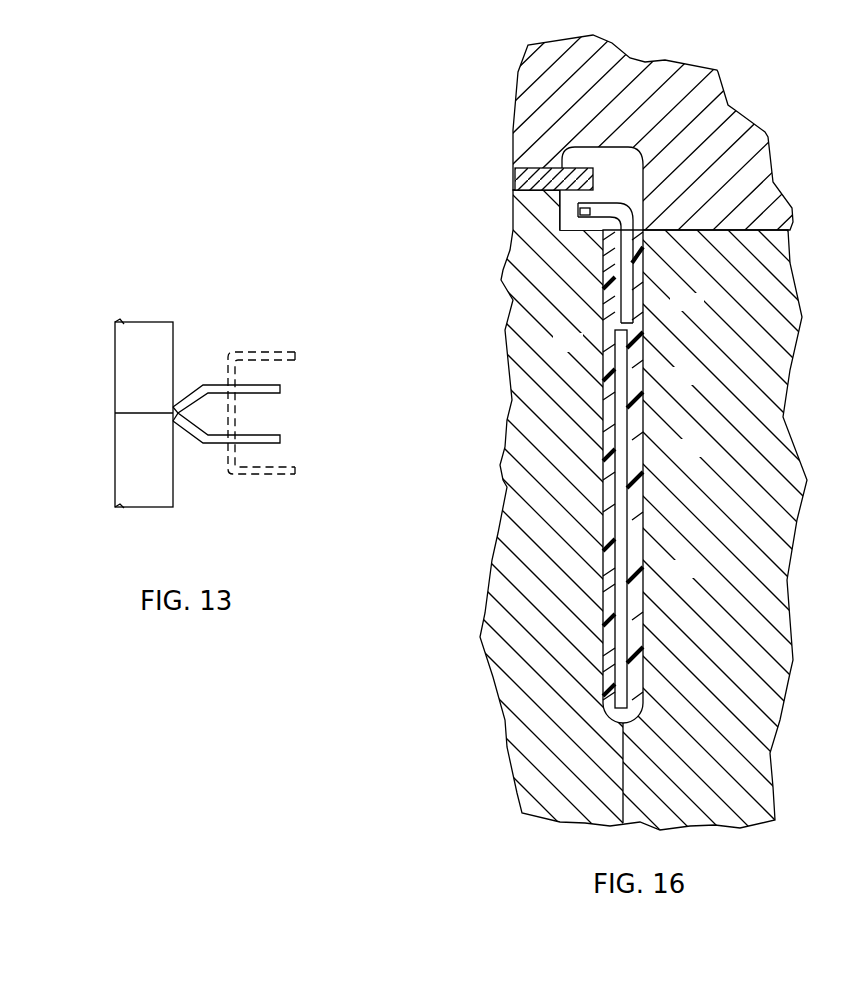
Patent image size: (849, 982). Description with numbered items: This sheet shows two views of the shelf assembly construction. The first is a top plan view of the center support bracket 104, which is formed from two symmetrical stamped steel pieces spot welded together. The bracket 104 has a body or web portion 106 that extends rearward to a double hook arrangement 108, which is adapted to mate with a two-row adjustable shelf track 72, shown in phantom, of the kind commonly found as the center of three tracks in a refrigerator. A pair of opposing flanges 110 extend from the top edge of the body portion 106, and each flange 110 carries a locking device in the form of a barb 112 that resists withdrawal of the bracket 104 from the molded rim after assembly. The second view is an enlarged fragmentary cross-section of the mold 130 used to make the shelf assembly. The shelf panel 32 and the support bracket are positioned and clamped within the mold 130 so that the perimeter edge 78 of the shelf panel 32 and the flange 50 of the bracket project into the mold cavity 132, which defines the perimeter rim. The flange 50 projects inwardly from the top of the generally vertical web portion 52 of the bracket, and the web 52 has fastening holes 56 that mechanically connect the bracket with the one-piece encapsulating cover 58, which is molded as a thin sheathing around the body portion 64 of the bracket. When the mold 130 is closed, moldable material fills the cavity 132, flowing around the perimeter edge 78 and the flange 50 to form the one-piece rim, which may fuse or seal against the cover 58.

In FIG. 16, the shelf panel 32 is at (515, 178).
In FIG. 16, the flange portion 50 is at (596, 206).
In FIG. 16, the web portion 52 is at (625, 461).
In FIG. 16, the fastening holes 56 is at (616, 339).
In FIG. 16, the encapsulating cover 58 is at (644, 306).
In FIG. 16, the body portion 64 is at (641, 386).
In FIG. 13, the adjustable shelf track 72 is at (272, 350).
In FIG. 16, the perimeter edge 78 is at (596, 178).
In FIG. 13, the center support bracket 104 is at (196, 513).
In FIG. 13, the body portion 106 is at (176, 408).
In FIG. 13, the double hook arrangement 108 is at (308, 387).
In FIG. 13, the opposing flanges 110 is at (123, 435).
In FIG. 13, the barb 112 is at (122, 320).
In FIG. 16, the mold 130 is at (801, 150).
In FIG. 16, the mold cavity 132 is at (651, 146).